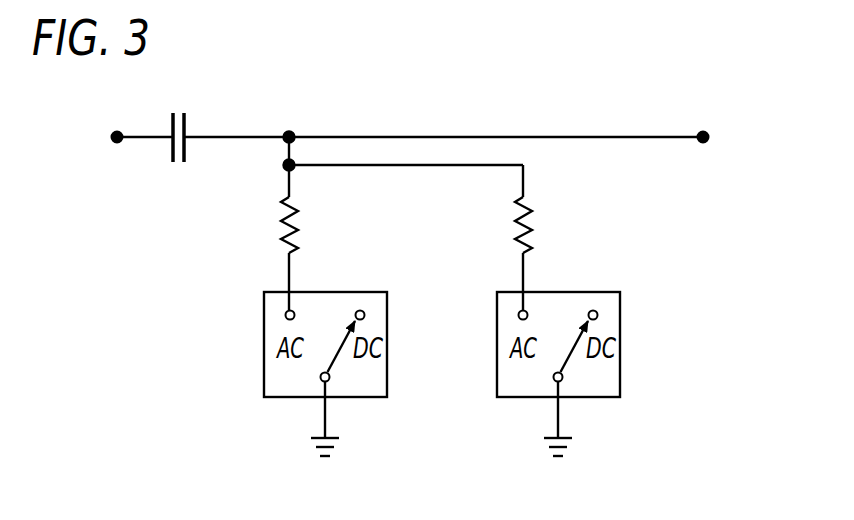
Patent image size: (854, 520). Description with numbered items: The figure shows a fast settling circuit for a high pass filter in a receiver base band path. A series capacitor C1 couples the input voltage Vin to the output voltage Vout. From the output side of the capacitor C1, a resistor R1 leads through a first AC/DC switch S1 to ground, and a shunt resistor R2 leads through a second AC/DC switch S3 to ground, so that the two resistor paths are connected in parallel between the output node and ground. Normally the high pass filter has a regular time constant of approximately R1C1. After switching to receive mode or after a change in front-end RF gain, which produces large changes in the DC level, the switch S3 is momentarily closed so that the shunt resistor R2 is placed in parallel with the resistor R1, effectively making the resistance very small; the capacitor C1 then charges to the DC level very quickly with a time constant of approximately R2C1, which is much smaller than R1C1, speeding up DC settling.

The input voltage Vin is at (96, 132).
The output voltage Vout is at (733, 131).
The capacitor C1 is at (199, 147).
The resistor R1 is at (311, 253).
The shunt resistor R2 is at (545, 253).
The switch S1 is at (305, 374).
The switch S3 is at (537, 374).